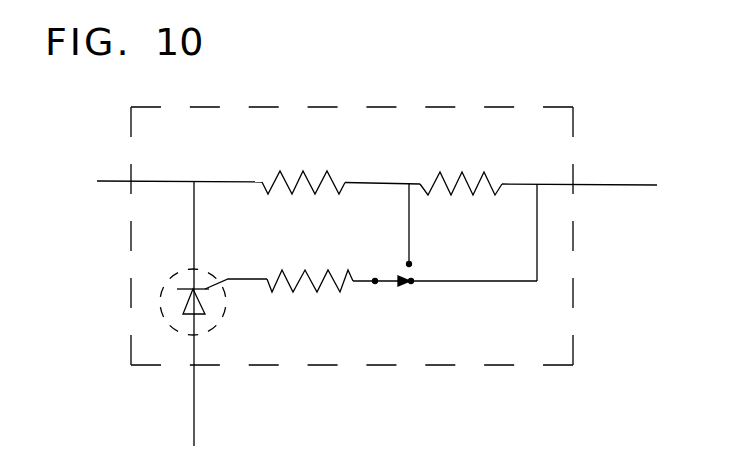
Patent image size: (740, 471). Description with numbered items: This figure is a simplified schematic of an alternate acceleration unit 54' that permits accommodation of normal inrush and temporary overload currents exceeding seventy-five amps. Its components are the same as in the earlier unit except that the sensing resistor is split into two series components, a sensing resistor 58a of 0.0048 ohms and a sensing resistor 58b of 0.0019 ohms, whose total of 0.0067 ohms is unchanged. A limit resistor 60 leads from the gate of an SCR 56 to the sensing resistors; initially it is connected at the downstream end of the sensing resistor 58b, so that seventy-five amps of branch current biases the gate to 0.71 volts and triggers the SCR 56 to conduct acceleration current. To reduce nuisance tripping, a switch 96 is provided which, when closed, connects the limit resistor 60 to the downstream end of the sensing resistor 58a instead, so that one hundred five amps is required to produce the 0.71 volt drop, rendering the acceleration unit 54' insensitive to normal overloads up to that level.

The acceleration unit 54' is at (380, 183).
The sensing resistor 58a is at (293, 178).
The sensing resistor 58b is at (473, 180).
The SCR 56 is at (227, 293).
The limit resistor 60 is at (348, 285).
The switch 96 is at (392, 282).